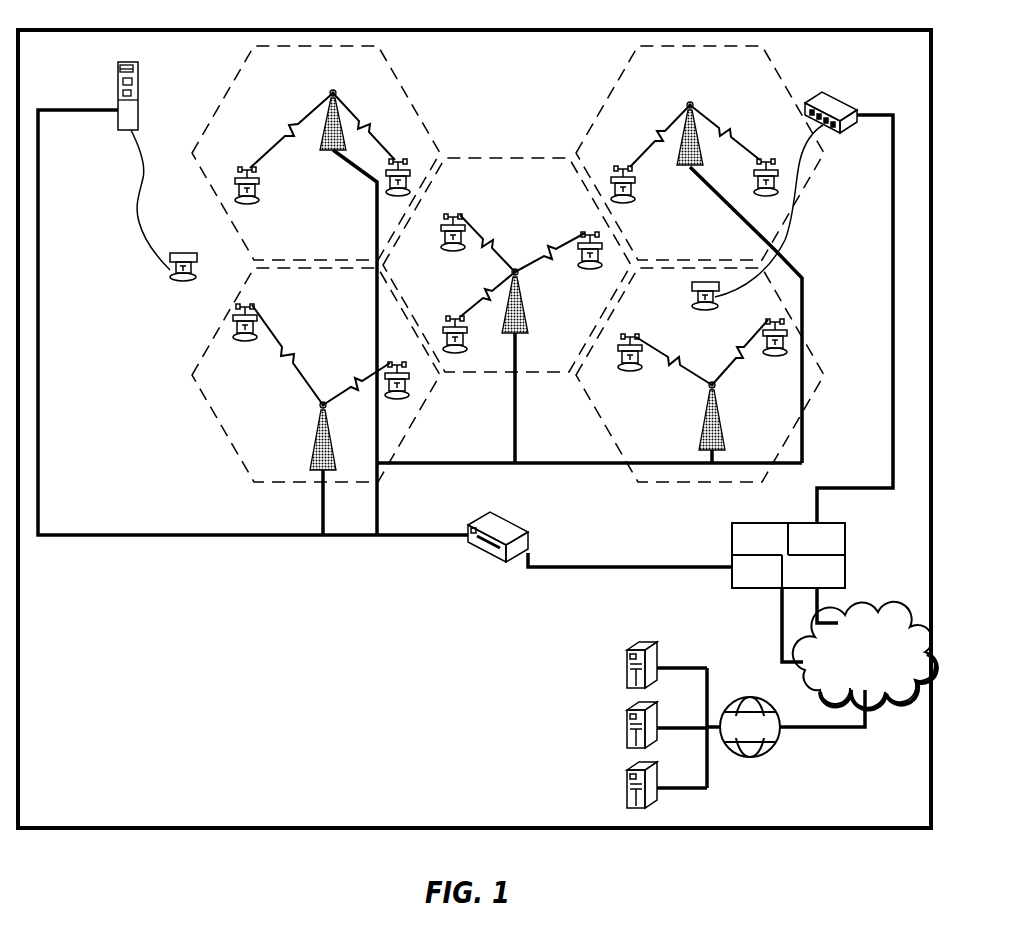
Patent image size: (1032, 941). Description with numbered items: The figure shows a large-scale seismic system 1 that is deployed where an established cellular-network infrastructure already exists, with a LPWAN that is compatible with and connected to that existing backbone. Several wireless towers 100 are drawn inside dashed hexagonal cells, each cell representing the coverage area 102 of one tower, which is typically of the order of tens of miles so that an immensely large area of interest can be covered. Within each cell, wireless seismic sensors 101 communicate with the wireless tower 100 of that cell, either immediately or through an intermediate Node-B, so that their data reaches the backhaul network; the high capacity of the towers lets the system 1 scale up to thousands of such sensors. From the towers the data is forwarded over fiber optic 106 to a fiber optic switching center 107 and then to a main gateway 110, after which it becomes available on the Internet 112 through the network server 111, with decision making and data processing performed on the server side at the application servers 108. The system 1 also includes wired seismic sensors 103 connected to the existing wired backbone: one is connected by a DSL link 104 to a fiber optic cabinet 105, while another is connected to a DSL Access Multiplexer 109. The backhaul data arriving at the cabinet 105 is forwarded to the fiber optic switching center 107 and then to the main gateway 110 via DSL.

The seismic system 1 is at (88, 30).
The wireless tower 100 is at (333, 90).
The wireless seismic sensor 101 is at (240, 210).
The coverage area 102 is at (417, 113).
The wired seismic sensor 103 is at (180, 280).
The DSL link 104 is at (138, 197).
The fiber optic cabinet 105 is at (143, 92).
The fiber optic 106 is at (38, 322).
The fiber optic switching center 107 is at (507, 517).
The application servers 108 is at (627, 665).
The DSL Access Multiplexer (DSLAM) 109 is at (837, 102).
The main gateway 110 is at (732, 543).
The network server 111 is at (886, 665).
The Internet 112 is at (760, 757).